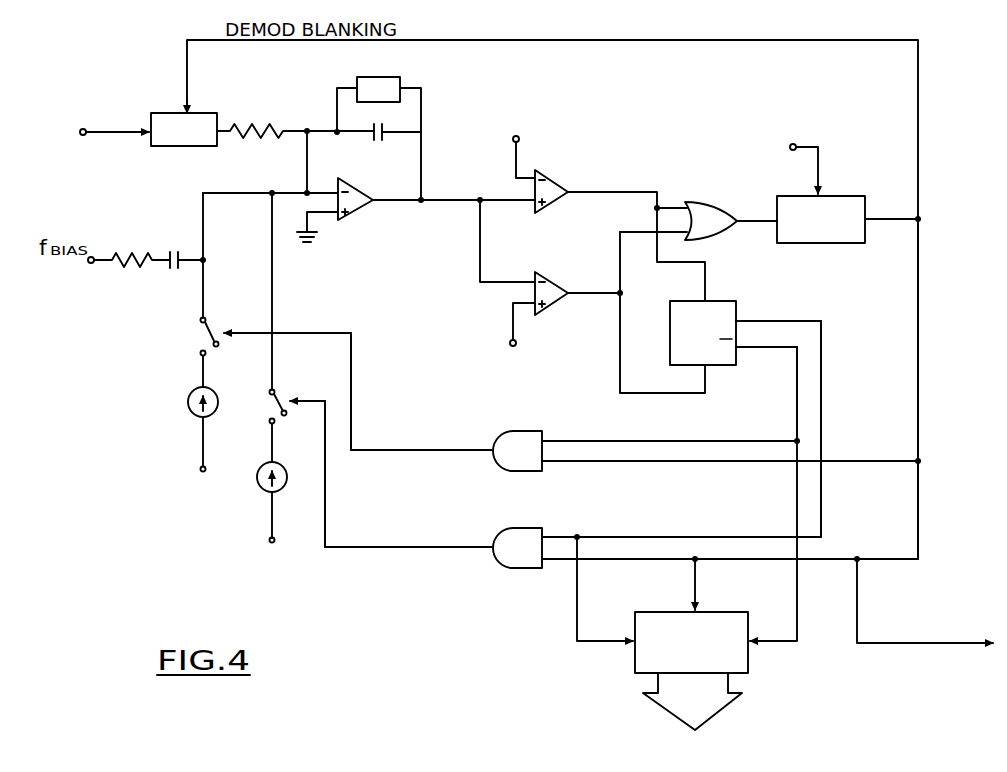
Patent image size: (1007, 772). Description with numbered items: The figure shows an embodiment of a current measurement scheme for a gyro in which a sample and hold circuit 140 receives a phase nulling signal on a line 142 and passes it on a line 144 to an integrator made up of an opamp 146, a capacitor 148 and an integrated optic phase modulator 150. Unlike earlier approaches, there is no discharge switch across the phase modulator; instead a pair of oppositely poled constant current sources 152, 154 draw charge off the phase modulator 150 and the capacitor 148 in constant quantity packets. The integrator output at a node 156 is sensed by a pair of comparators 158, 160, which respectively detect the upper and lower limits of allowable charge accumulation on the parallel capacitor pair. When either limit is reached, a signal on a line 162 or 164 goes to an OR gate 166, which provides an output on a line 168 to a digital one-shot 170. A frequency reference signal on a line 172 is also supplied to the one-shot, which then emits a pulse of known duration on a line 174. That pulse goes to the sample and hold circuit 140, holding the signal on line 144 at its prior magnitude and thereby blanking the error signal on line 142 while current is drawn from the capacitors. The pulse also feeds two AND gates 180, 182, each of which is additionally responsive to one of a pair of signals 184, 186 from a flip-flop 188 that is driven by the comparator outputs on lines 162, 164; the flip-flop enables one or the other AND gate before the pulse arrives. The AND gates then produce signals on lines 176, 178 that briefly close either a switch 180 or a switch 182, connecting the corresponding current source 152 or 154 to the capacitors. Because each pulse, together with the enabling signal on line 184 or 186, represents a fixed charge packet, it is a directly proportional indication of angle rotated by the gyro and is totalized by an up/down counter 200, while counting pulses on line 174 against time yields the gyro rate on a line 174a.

The sample and hold circuit 140 is at (207, 113).
The line 142 is at (95, 133).
The line 144 is at (230, 130).
The opamp 146 is at (360, 214).
The capacitor 148 is at (384, 138).
The integrated optic phase modulator 150 is at (393, 77).
The constant current source 152 is at (190, 413).
The constant current source 154 is at (283, 488).
The node 156 is at (480, 204).
The comparator 158 is at (553, 172).
The comparator 160 is at (555, 313).
The line 162 is at (618, 190).
The line 164 is at (588, 292).
The OR gate 166 is at (697, 202).
The line 168 is at (753, 222).
The digital one-shot 170 is at (845, 243).
The line 172 is at (808, 147).
The line 174 is at (918, 262).
The line 174a is at (953, 643).
The line 176 is at (396, 449).
The line 178 is at (380, 547).
The switch and AND gate 180 is at (518, 431).
The switch and AND gate 182 is at (530, 528).
The signal 184 is at (748, 441).
The signal 186 is at (822, 420).
The flip-flop 188 is at (717, 301).
The up/down counter 200 is at (748, 660).